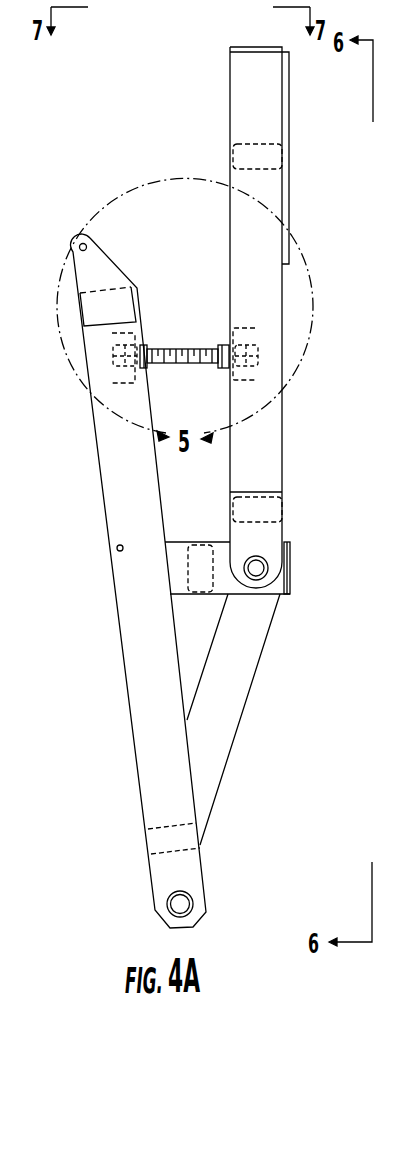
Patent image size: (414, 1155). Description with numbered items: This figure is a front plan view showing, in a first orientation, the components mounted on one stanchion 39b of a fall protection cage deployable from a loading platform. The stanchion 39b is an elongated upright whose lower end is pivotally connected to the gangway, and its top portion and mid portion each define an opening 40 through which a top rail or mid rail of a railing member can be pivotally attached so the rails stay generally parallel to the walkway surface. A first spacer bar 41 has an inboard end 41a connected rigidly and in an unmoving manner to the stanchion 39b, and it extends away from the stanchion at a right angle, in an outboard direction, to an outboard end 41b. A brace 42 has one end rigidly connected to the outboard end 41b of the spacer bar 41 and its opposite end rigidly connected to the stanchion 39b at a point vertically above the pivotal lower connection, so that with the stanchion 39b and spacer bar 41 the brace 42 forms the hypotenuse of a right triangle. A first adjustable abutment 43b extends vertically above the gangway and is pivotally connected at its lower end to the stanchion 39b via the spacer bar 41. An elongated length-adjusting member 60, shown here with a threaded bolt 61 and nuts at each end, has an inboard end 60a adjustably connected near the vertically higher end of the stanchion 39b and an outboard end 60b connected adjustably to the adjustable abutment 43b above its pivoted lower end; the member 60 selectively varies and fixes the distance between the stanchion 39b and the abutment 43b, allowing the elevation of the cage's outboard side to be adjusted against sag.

The first stanchion 39b is at (110, 478).
The opening 40 is at (79, 248).
The first spacer bar 41 is at (240, 567).
The inboard end 41a is at (177, 569).
The outboard end 41b is at (282, 585).
The brace 42 is at (252, 652).
The first adjustable abutment 43b is at (235, 92).
The elongated length-adjusting member 60 is at (168, 252).
The inboard end 60a is at (113, 353).
The outboard end 60b is at (258, 354).
The threaded bolt 61 is at (176, 349).